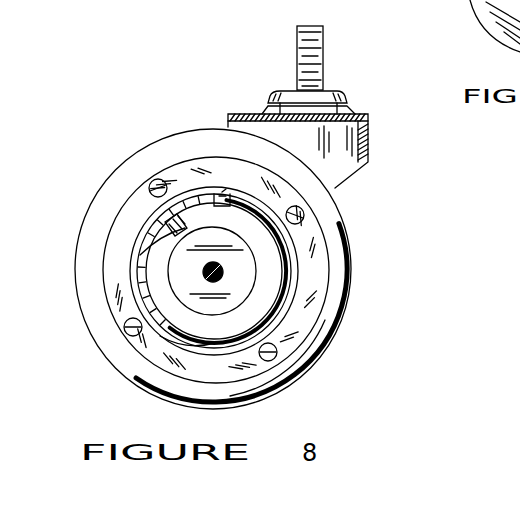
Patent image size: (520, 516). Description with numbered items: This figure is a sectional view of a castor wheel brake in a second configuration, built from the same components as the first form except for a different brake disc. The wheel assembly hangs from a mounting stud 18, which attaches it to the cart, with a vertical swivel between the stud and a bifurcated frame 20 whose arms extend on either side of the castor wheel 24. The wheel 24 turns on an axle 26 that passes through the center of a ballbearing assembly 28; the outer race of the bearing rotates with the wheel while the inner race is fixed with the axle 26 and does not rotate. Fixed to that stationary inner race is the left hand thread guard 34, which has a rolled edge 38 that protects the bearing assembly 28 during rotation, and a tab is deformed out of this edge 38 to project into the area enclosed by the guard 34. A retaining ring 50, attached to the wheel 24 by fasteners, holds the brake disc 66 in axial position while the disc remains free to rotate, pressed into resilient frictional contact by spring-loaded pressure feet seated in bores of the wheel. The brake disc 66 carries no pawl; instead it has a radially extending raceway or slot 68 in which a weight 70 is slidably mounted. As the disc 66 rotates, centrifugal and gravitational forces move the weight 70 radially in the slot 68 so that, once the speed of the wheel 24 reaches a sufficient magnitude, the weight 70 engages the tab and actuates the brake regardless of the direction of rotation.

The mounting stud 18 is at (298, 56).
The bifurcated frame 20 is at (340, 163).
The castor wheel 24 is at (332, 316).
The axle 26 is at (243, 292).
The ballbearing assembly 28 is at (216, 282).
The left hand thread guard 34 is at (160, 337).
The rolled edge 38 is at (222, 345).
The retaining ring 50 is at (308, 232).
The brake disc 66 is at (167, 293).
The slot 68 is at (175, 236).
The weight 70 is at (172, 235).